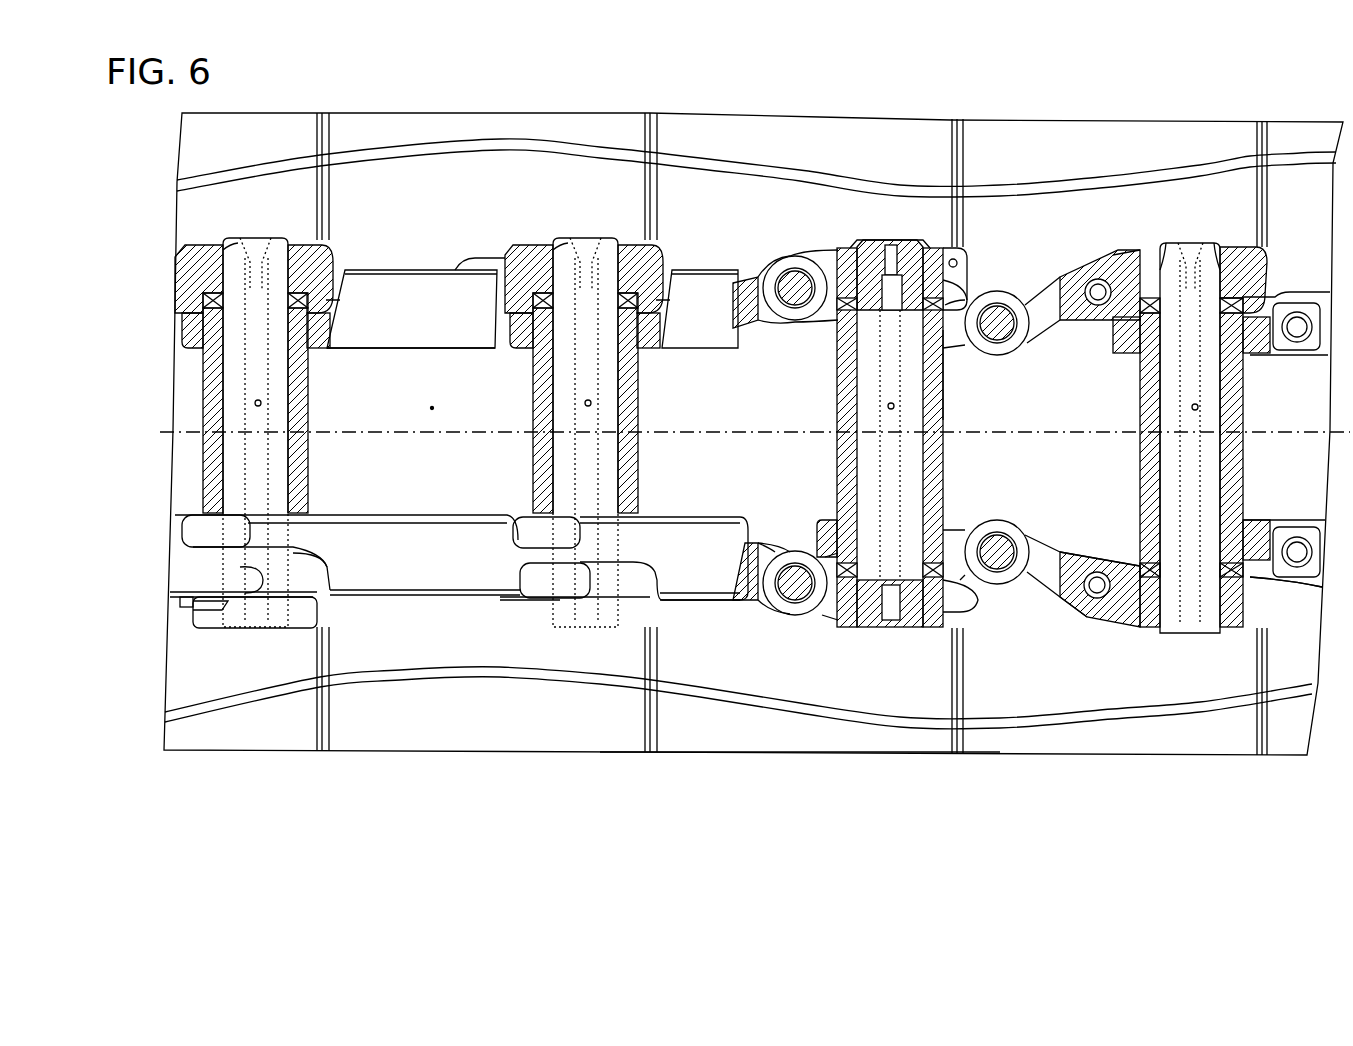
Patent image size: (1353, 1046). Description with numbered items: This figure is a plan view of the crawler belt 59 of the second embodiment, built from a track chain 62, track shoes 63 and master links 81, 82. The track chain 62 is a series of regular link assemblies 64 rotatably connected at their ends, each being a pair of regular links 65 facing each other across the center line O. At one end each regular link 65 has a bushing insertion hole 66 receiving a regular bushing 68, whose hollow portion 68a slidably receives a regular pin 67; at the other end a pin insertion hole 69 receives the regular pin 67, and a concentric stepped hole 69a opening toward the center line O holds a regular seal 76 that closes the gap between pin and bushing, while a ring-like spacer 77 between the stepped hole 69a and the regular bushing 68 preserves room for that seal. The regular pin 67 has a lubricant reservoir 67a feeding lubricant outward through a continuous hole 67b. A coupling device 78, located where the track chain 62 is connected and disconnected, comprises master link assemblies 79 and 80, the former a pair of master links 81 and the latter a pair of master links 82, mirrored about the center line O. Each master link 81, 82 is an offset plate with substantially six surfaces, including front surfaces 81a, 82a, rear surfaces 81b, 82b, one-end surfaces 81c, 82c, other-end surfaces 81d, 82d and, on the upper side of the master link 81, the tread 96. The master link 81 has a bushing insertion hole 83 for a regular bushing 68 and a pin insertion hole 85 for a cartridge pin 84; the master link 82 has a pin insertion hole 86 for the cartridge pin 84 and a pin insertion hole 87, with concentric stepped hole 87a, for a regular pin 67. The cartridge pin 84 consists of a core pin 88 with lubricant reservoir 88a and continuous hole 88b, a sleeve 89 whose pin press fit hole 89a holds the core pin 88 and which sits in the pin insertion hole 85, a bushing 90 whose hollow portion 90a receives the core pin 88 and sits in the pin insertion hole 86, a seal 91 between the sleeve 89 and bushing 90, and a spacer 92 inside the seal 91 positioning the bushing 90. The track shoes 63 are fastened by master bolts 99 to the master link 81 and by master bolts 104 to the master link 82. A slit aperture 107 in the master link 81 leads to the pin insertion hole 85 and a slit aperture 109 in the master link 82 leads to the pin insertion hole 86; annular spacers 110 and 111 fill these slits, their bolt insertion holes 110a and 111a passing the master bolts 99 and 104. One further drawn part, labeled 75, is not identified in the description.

The crawler belt 59 is at (985, 770).
The track chain 62 is at (430, 222).
The track shoe 63 is at (242, 753).
The regular link assembly 64 is at (224, 630).
The regular link 65 is at (206, 250).
The bushing insertion hole 66 is at (330, 348).
The regular pin 67 is at (720, 383).
The lubricant reservoir 67a is at (1190, 467).
The continuous hole 67b is at (258, 406).
The regular bushing 68 is at (758, 467).
The hollow portion 68a is at (310, 412).
The pin insertion hole 69 is at (463, 254).
The stepped hole 69a is at (332, 303).
The lower plate 75 is at (410, 533).
The regular seal 76 is at (310, 262).
The spacer 77 is at (296, 293).
The coupling device 78 is at (627, 358).
The master link assembly 79 is at (760, 442).
The master link assembly 80 is at (1077, 620).
The master link 81 is at (700, 270).
The front surface 81a is at (757, 604).
The rear surface 81b is at (770, 550).
The one end surface 81c is at (506, 525).
The other end surface 81d is at (970, 606).
The master link 82 is at (1028, 409).
The front surface 82a is at (1050, 602).
The rear surface 82b is at (1062, 552).
The one end surface 82c is at (824, 548).
The other end surface 82d is at (1258, 600).
The bushing insertion hole 83 is at (496, 350).
The cartridge pin 84 is at (895, 366).
The pin insertion hole 85 is at (957, 266).
The pin insertion hole 86 is at (944, 380).
The pin insertion hole 87 is at (1166, 243).
The stepped hole 87a is at (1120, 256).
The core pin 88 is at (901, 384).
The lubricant reservoir 88a is at (857, 480).
The continuous hole 88b is at (925, 422).
The sleeve 89 is at (987, 236).
The pin press fit hole 89a is at (966, 270).
The bushing 90 is at (852, 437).
The hollow portion 90a is at (837, 405).
The seal 91 is at (952, 355).
The spacer 92 is at (836, 252).
The tread 96 is at (680, 520).
The master bolt 99 is at (795, 308).
The master bolt 104 is at (1098, 306).
The slit aperture 107 is at (810, 615).
The slit aperture 109 is at (1030, 300).
The spacer 110 is at (745, 330).
The bolt insertion hole 110a is at (778, 270).
The spacer 111 is at (1042, 432).
The bolt insertion hole 111a is at (1008, 342).
The center line O is at (420, 410).